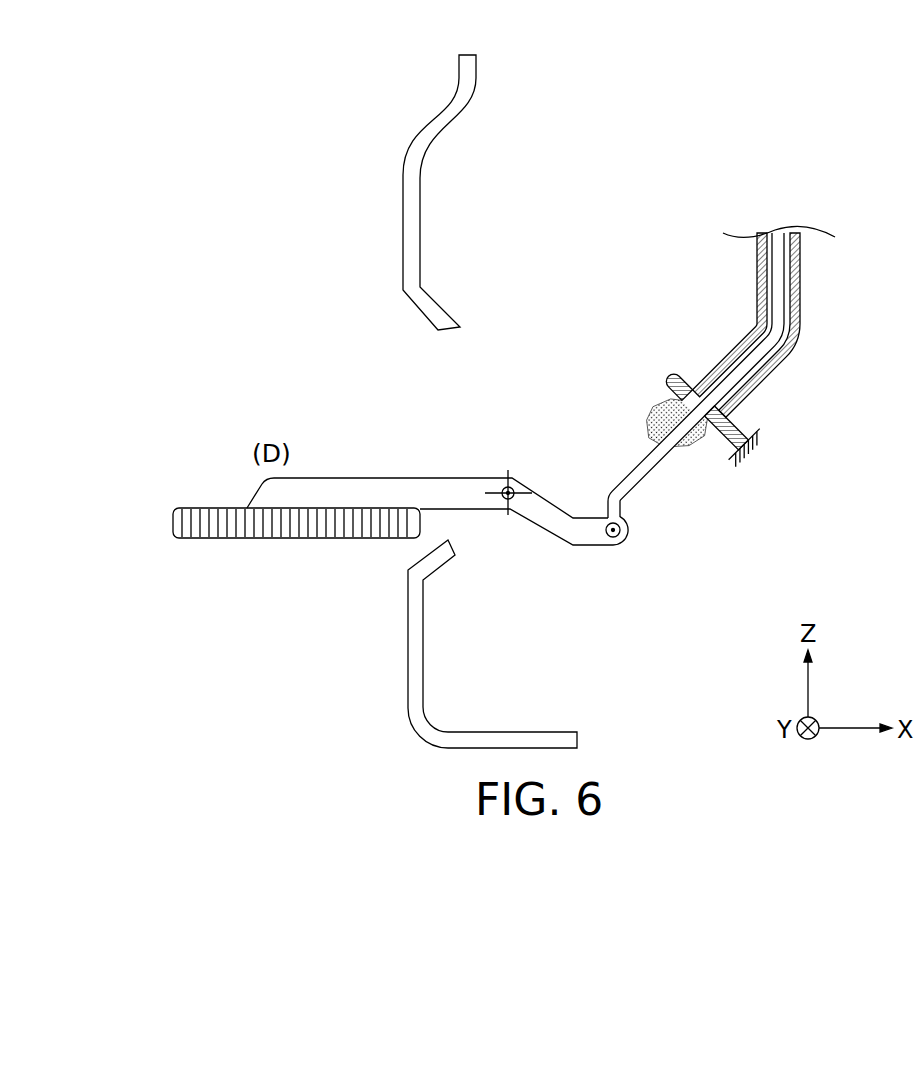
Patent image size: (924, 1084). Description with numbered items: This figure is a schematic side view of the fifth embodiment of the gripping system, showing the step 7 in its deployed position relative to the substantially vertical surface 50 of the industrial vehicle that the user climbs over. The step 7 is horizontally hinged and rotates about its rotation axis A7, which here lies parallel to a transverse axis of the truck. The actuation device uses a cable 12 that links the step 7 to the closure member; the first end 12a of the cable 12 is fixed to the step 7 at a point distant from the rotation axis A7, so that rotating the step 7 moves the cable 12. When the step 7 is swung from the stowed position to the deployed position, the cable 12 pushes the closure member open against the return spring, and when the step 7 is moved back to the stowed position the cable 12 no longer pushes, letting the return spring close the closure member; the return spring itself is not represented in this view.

The step 7 is at (210, 507).
The substantially vertical surface 50 is at (403, 292).
The cable 12 is at (780, 318).
The first end of the cable 12a is at (630, 537).
The rotation axis of the step A7 is at (515, 505).